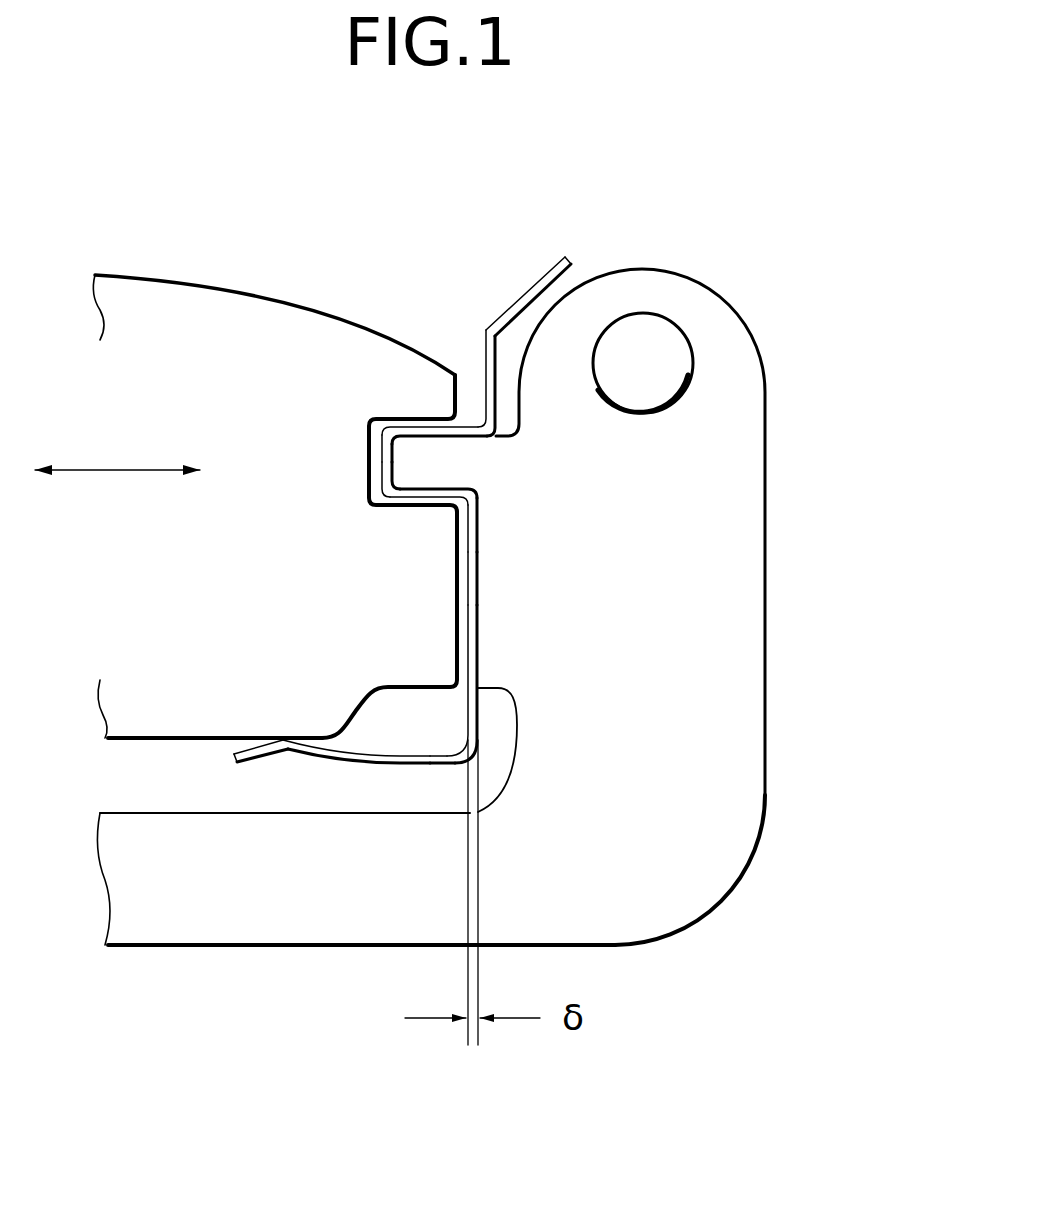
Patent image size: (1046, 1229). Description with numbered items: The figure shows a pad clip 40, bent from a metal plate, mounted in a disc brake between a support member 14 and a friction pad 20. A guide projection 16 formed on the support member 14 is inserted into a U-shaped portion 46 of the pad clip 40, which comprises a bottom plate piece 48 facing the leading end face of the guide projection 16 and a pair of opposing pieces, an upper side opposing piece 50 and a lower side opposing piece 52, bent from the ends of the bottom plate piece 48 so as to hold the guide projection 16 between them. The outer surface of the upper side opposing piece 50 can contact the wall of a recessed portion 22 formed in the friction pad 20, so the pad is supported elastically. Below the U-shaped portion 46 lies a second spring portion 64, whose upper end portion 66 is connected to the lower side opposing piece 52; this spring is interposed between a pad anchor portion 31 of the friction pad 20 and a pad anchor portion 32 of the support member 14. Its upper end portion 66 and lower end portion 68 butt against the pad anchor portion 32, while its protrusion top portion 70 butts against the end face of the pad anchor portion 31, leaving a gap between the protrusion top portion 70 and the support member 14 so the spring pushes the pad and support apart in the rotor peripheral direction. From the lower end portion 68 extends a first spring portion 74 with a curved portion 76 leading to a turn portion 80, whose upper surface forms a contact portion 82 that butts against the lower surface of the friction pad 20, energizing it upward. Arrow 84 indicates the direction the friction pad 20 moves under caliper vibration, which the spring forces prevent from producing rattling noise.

The support member 14 is at (805, 460).
The guide projection 16 is at (425, 448).
The friction pad 20 is at (268, 286).
The recessed portion 22 is at (383, 441).
The pad anchor portion 31 is at (393, 688).
The pad anchor portion 32 is at (480, 577).
The pad clip 40 is at (531, 262).
The U-shaped portion 46 is at (418, 400).
The bottom plate piece 48 is at (383, 491).
The upper side opposing piece 50 is at (460, 427).
The lower side opposing piece 52 is at (473, 488).
The second spring portion 64 is at (432, 559).
The upper end portion 66 is at (480, 528).
The lower end portion 68 is at (478, 667).
The protrusion top portion 70 is at (464, 638).
The first spring portion 74 is at (409, 800).
The curved portion 76 is at (450, 762).
The turn portion 80 is at (323, 758).
The contact portion 82 is at (277, 737).
The arrow 84 is at (101, 468).